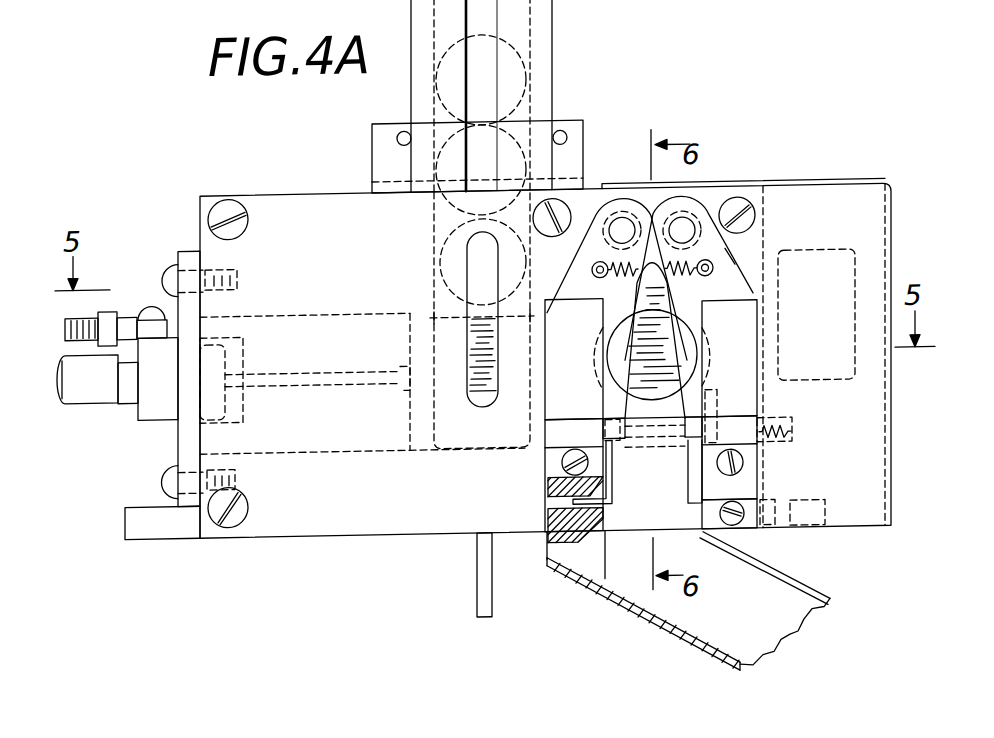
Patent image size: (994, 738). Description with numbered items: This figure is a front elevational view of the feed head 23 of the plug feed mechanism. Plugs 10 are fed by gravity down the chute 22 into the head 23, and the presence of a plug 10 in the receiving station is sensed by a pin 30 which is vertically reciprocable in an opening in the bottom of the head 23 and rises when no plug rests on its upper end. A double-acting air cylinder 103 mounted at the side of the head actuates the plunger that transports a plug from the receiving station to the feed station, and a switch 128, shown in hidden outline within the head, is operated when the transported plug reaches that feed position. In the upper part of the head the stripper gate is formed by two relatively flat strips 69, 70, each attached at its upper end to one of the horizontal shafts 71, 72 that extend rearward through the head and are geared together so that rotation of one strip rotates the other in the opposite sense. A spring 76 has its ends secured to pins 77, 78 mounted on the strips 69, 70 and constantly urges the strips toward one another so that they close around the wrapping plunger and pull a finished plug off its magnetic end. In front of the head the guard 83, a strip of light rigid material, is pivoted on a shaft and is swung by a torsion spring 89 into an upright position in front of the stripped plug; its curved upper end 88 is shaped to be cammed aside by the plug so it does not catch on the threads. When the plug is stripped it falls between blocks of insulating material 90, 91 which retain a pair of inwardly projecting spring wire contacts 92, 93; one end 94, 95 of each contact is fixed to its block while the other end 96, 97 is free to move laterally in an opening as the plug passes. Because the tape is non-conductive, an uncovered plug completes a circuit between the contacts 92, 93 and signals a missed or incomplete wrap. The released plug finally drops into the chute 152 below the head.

The plug 10 is at (450, 223).
The chute 22 is at (555, 55).
The feed head 23 is at (311, 198).
The pin 30 is at (477, 569).
The flat strip 69 is at (740, 278).
The flat strip 70 is at (578, 292).
The shaft 71 is at (682, 230).
The shaft 72 is at (625, 229).
The spring 76 is at (714, 279).
The pin 77 is at (711, 288).
The pin 78 is at (594, 278).
The guard 83 is at (653, 377).
The curved end 88 is at (648, 288).
The torsion spring 89 is at (792, 447).
The block of insulating material 90 is at (757, 409).
The block of insulating material 91 is at (546, 419).
The spring wire contact 92 is at (693, 496).
The spring wire contact 93 is at (612, 490).
The fixed end of spring contact 94 is at (760, 488).
The fixed end of spring contact 95 is at (548, 488).
The free end of spring contact 96 is at (698, 513).
The free end of spring contact 97 is at (614, 516).
The cylinder 103 is at (91, 401).
The switch 128 is at (847, 264).
The chute 152 is at (705, 663).